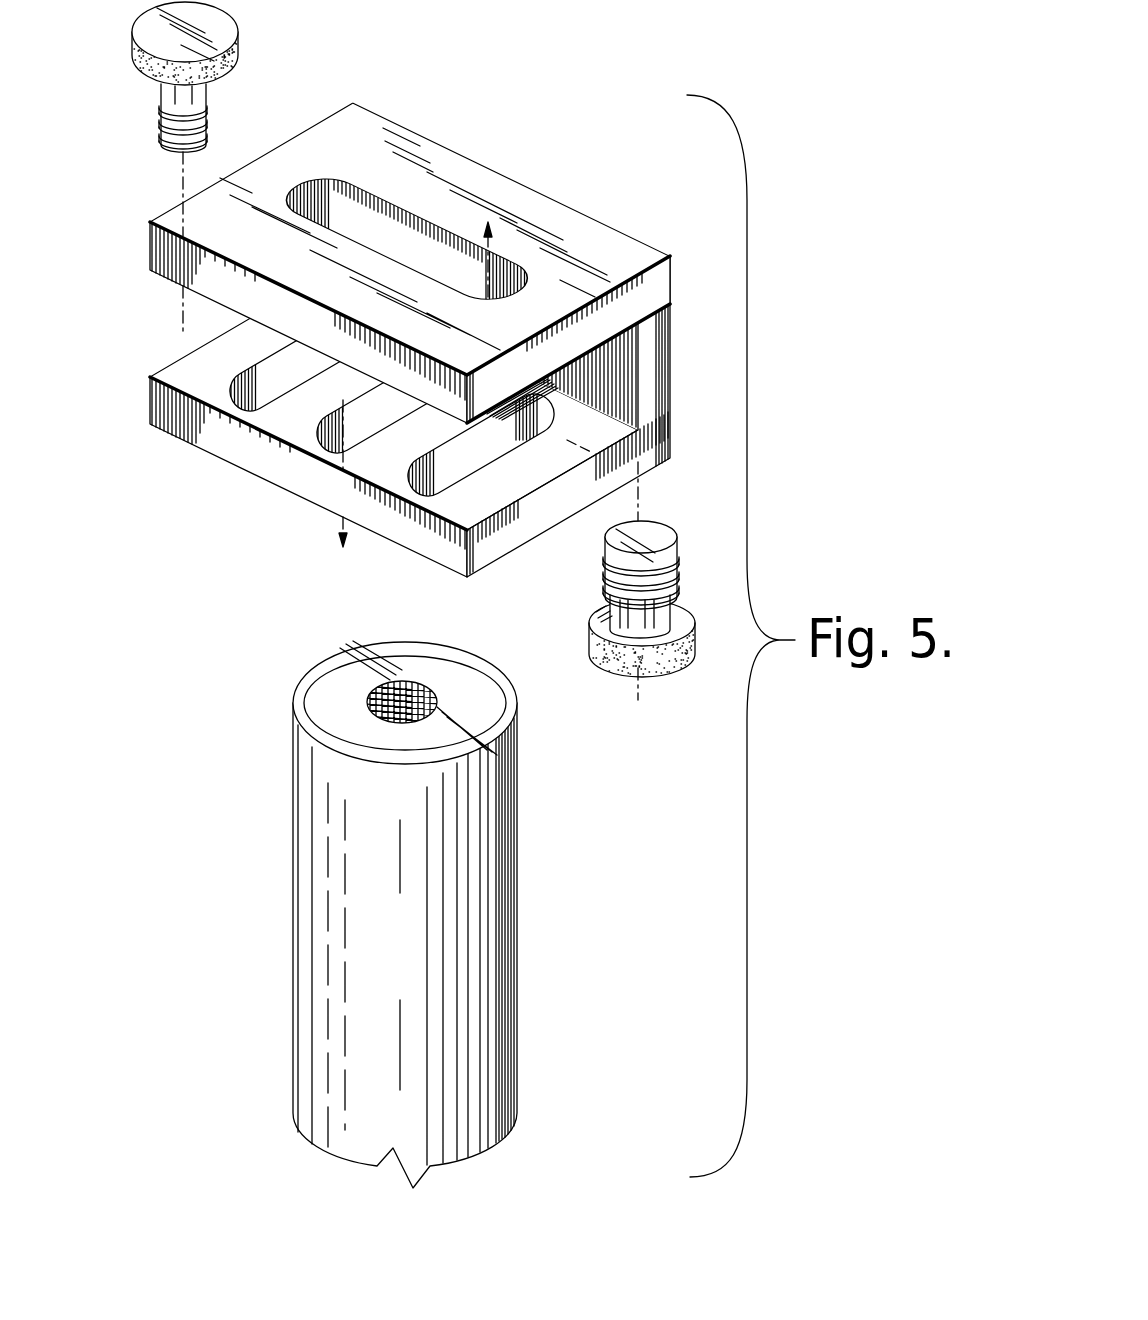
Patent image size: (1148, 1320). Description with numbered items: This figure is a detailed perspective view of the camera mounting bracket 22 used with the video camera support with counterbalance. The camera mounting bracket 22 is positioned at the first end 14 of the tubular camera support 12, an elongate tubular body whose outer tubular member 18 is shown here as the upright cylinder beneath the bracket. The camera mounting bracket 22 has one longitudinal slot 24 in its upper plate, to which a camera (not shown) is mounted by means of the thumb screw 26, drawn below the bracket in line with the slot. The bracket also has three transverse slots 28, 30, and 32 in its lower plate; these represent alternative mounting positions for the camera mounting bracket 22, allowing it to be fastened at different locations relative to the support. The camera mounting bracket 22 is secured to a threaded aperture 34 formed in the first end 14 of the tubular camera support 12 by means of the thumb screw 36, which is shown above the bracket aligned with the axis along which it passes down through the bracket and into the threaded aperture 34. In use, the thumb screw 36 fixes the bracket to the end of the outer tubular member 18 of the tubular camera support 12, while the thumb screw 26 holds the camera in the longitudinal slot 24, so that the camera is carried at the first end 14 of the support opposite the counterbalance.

The tubular camera support 12 is at (371, 900).
The first end 14 is at (385, 688).
The outer tubular member 18 is at (293, 960).
The camera mounting bracket 22 is at (406, 321).
The longitudinal slot 24 is at (363, 211).
The thumb screw 26 is at (637, 667).
The transverse slot 28 is at (272, 377).
The transverse slot 30 is at (352, 418).
The transverse slot 32 is at (448, 465).
The threaded aperture 34 is at (420, 684).
The thumb screw 36 is at (150, 79).